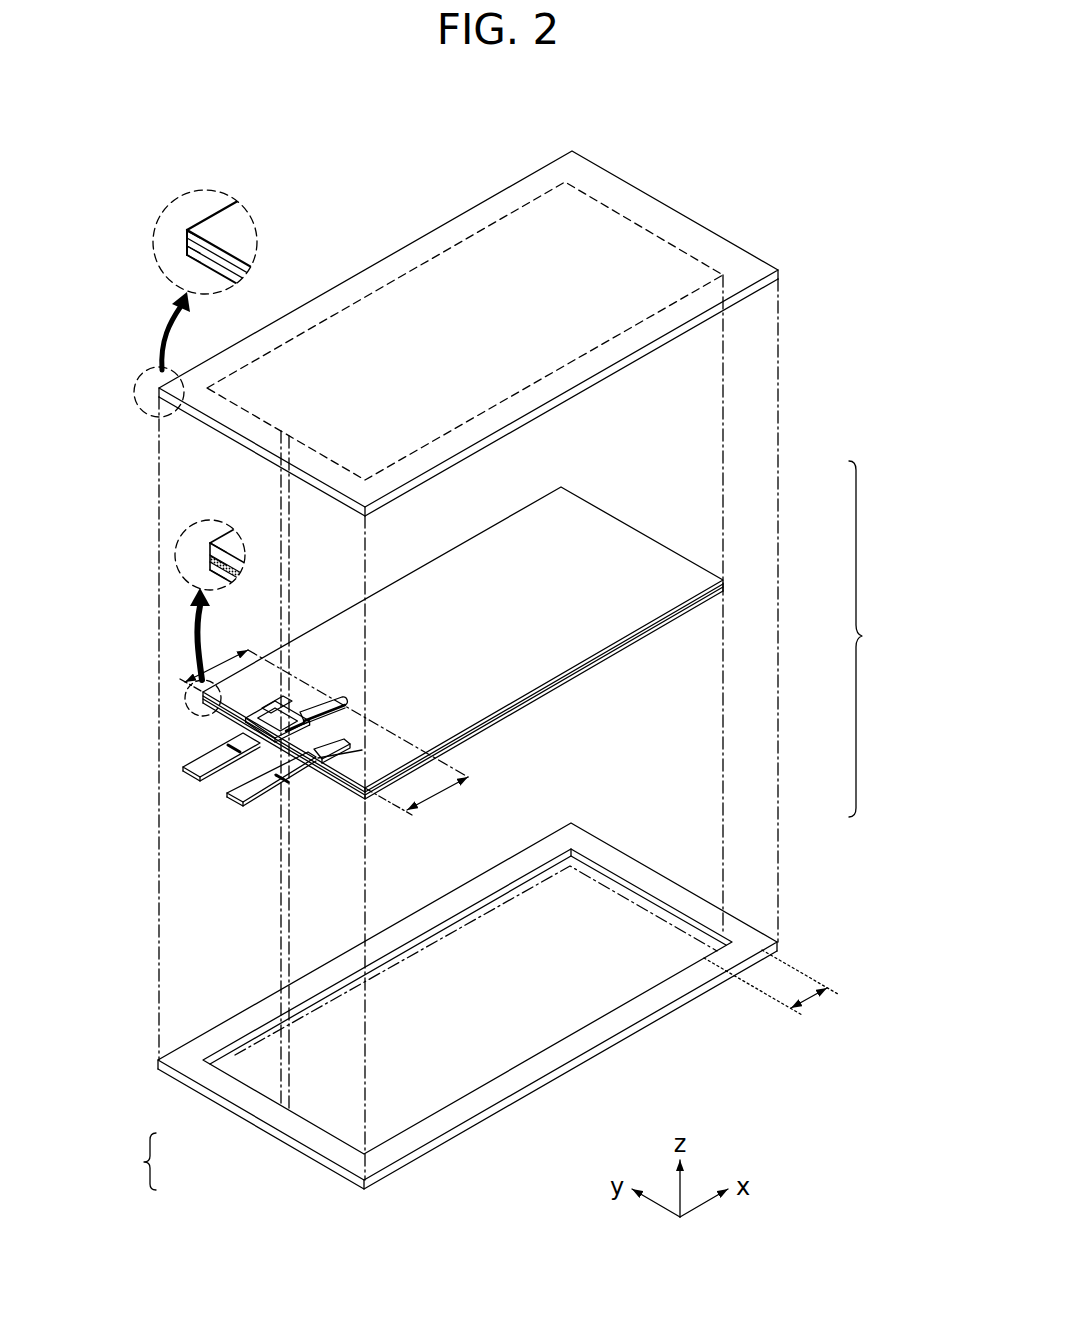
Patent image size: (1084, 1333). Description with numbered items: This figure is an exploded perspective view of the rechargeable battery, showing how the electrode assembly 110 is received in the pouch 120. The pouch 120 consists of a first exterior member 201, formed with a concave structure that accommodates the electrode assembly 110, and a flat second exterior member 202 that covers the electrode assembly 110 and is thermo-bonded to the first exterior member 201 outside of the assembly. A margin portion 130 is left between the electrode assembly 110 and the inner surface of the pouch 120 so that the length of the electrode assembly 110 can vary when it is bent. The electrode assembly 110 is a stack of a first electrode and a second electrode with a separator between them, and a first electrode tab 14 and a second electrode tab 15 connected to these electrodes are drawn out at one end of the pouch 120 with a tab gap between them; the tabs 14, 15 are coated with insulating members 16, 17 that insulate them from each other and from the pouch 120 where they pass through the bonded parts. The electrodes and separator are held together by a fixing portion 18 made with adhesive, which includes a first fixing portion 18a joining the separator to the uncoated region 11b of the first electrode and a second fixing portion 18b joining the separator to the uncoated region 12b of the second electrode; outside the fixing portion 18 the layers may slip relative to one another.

The uncoated region of the first electrode 11b is at (328, 760).
The uncoated region of the second electrode 12b is at (268, 714).
The first electrode tab 14 is at (246, 792).
The second electrode tab 15 is at (198, 768).
The insulating member 16 is at (293, 763).
The insulating member 17 is at (242, 742).
The fixing portion 18 is at (155, 1162).
The first fixing portion 18a is at (419, 798).
The second fixing portion 18b is at (324, 701).
The electrode assembly 110 is at (576, 685).
The pouch 120 is at (877, 639).
The margin portion 130 is at (782, 989).
The first exterior member 201 is at (662, 855).
The second exterior member 202 is at (645, 403).